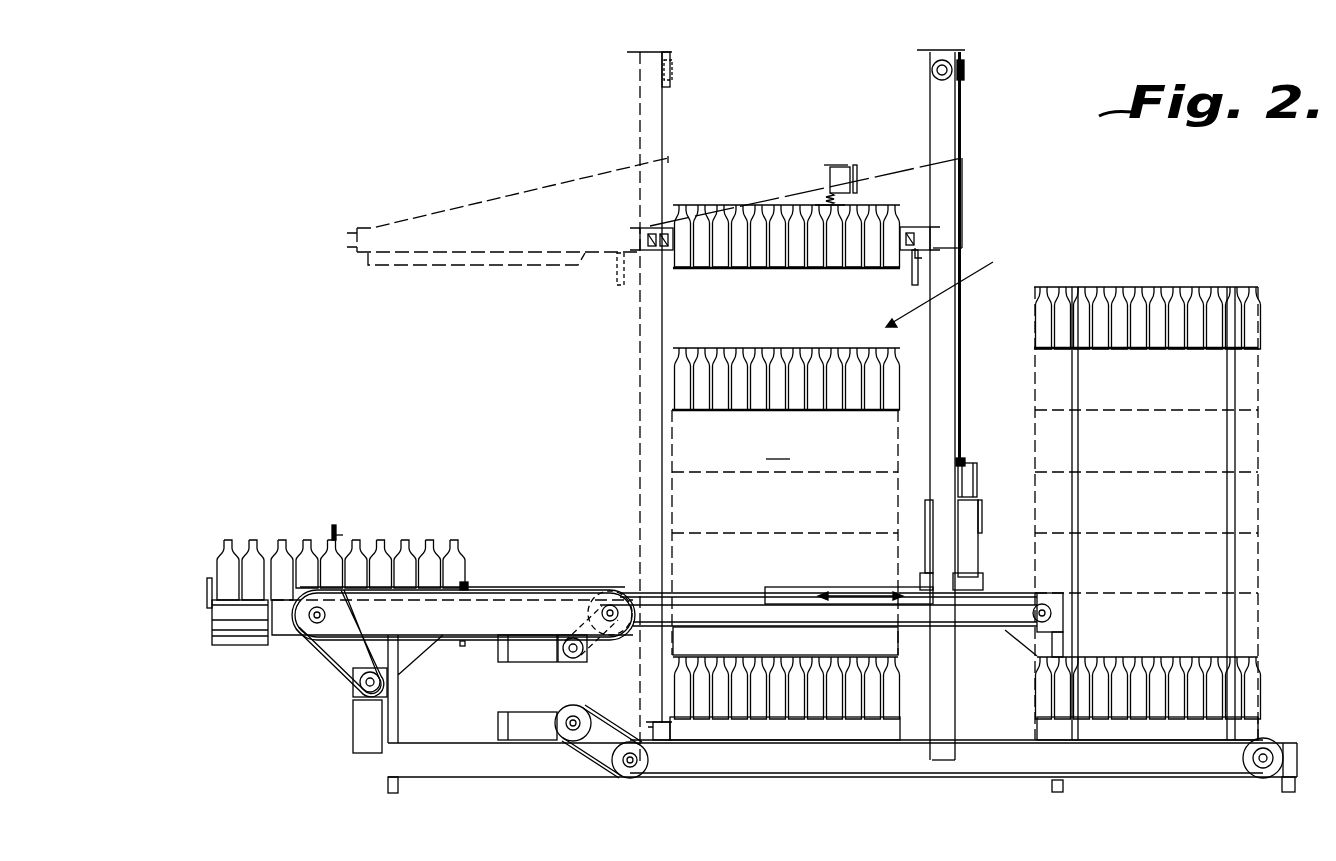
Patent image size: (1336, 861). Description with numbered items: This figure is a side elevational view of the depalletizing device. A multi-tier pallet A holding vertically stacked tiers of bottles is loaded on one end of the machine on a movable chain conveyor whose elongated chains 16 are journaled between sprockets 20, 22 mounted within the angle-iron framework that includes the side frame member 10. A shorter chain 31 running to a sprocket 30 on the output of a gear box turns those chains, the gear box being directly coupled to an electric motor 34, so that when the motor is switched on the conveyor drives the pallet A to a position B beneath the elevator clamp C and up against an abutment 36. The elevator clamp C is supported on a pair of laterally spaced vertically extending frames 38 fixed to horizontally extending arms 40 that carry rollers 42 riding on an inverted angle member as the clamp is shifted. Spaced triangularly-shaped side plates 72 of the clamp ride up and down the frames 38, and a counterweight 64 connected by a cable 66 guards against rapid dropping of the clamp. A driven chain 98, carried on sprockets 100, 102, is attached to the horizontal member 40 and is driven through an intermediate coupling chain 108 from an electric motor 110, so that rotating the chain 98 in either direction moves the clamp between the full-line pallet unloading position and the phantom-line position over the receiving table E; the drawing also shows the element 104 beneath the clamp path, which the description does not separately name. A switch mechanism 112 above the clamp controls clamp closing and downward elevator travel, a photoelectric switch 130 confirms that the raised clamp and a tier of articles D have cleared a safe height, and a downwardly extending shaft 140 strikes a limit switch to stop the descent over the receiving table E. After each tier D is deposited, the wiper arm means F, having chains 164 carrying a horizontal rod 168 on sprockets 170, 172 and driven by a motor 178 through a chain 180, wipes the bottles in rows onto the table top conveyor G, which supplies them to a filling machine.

The side frame member 10 is at (462, 772).
The elongated chain 16 is at (1000, 740).
The sprocket 20 is at (1270, 745).
The sprocket 22 is at (632, 778).
The sprocket 30 is at (578, 696).
The shorter chain 31 is at (585, 755).
The electric motor 34 is at (498, 732).
The abutment 36 is at (668, 740).
The vertically extending frame 38 is at (637, 333).
The horizontally extending arm 40 is at (838, 587).
The roller 42 is at (782, 587).
The counterweight 64 is at (979, 487).
The cable 66 is at (962, 320).
The triangularly-shaped side plate 72 is at (515, 193).
The driven chain 98 is at (966, 628).
The sprocket 100 is at (1043, 594).
The sprocket 102 is at (597, 636).
The support plate 104 is at (880, 626).
The intermediate coupling chain 108 is at (585, 618).
The electric motor 110 is at (498, 650).
The switch mechanism 112 is at (818, 159).
The photoelectric switch 130 is at (912, 266).
The downwardly extending shaft 140 is at (918, 276).
The chain 164 is at (547, 588).
The horizontal rod 168 is at (460, 645).
The sprocket 170 is at (612, 590).
The sprocket 172 is at (310, 627).
The motor 178 is at (360, 720).
The chain 180 is at (330, 660).
The multi-tier pallet A is at (1252, 383).
The position underneath elevator clamp B is at (951, 292).
The elevator clamp C is at (955, 198).
The tier of articles D is at (683, 372).
The receiving table E is at (497, 600).
The wiper arm means F is at (465, 584).
The table top conveyor G is at (222, 625).